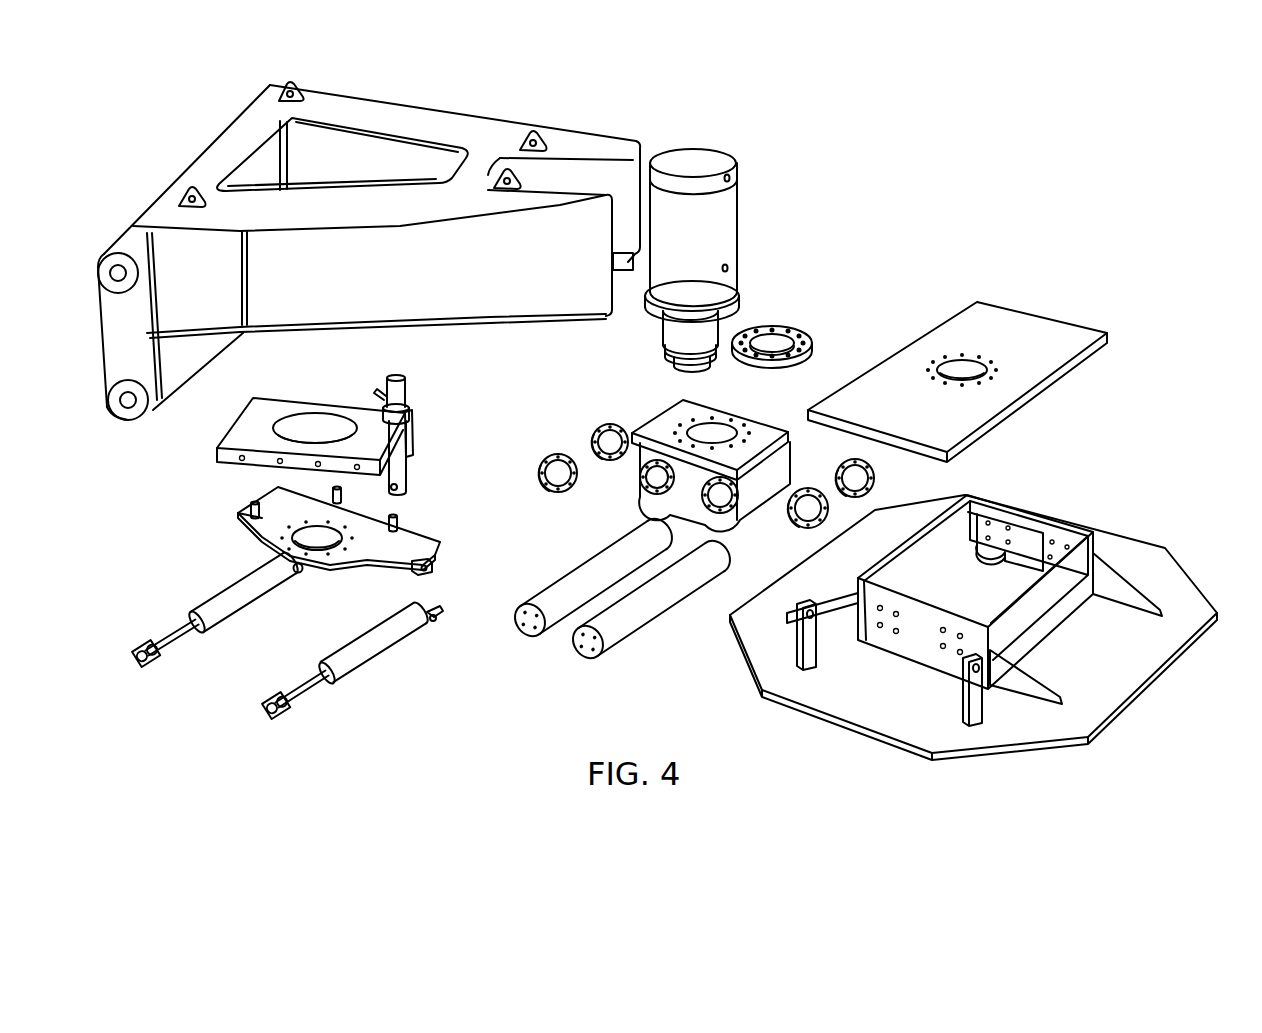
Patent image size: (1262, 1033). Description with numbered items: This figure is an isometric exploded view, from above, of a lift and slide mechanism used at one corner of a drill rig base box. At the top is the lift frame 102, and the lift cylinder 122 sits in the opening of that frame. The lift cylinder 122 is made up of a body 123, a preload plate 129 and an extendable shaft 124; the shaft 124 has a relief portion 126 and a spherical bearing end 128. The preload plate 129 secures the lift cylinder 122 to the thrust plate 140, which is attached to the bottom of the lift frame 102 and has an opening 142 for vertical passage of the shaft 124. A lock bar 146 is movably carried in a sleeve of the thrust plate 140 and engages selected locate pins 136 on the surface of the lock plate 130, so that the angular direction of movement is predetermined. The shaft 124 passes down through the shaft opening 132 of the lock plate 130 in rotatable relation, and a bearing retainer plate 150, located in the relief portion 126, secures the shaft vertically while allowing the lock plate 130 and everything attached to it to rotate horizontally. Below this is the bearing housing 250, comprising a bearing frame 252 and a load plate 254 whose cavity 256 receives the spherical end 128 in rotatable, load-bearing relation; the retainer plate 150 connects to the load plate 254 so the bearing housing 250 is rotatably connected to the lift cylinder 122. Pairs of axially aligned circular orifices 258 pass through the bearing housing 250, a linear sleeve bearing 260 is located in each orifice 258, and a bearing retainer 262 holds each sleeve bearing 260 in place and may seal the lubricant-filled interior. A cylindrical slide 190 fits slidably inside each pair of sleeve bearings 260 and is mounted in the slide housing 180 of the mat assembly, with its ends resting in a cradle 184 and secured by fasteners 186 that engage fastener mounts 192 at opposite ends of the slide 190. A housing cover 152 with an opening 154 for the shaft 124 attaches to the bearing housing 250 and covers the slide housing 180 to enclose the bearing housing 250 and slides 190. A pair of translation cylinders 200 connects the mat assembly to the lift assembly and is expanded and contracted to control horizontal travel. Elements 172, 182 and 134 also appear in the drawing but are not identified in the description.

The lift frame 102 is at (462, 108).
The lift cylinder 122 is at (758, 133).
The body 123 is at (737, 230).
The shaft 124 is at (662, 331).
The relief portion 126 is at (664, 351).
The spherical bearing end 128 is at (690, 373).
The preload plate 129 is at (738, 298).
The bearing retainer plate 150 is at (790, 325).
The housing cover 152 is at (1040, 337).
The opening 154 is at (955, 370).
The bearing housing 250 is at (751, 407).
The bearing frame 252 is at (758, 502).
The load plate 254 is at (655, 430).
The cavity 256 is at (710, 432).
The circular orifices 258 is at (645, 478).
The linear sleeve bearing 260 is at (653, 500).
The bearing retainer 262 is at (540, 466).
The cylindrical slide 190 is at (560, 580).
The fastener mounts 192 is at (520, 630).
The base plate 172 is at (1195, 583).
The slide housing 180 is at (1053, 600).
The posts 182 is at (963, 700).
The cradle 184 is at (1025, 530).
The fasteners 186 is at (880, 625).
The thrust plate 140 is at (225, 436).
The opening 142 is at (315, 420).
The lock bar 146 is at (408, 395).
The lock plate 130 is at (262, 508).
The shaft opening 132 is at (330, 543).
The tab 134 is at (441, 556).
The locate pins 136 is at (405, 525).
The translation cylinders 200 is at (365, 637).